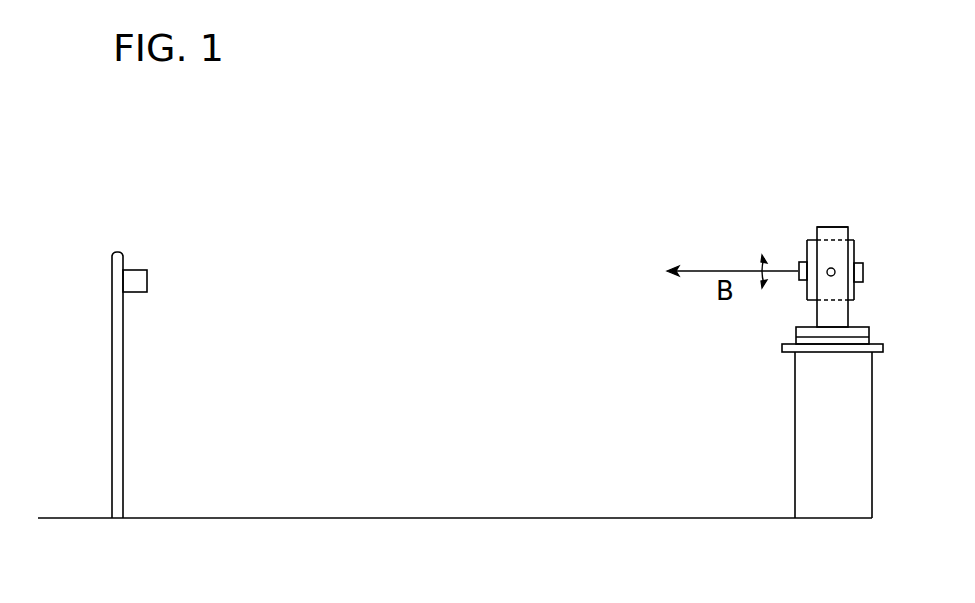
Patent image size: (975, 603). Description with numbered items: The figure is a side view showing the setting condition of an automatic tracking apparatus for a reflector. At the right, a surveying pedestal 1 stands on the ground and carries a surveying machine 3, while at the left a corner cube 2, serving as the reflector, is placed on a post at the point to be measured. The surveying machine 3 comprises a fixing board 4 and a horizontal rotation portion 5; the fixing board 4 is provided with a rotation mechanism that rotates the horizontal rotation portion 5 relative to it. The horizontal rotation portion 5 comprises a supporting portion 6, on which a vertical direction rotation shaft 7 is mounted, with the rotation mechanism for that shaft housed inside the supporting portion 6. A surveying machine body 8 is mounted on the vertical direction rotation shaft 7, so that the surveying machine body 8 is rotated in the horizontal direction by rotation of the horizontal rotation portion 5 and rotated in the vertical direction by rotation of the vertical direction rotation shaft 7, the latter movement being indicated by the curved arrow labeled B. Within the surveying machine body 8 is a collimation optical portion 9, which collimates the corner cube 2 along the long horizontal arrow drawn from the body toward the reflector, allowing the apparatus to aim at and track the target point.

The surveying pedestal 1 is at (797, 423).
The corner cube 2 is at (147, 280).
The surveying machine 3 is at (822, 223).
The fixing board 4 is at (784, 345).
The horizontal rotation portion 5 is at (796, 333).
The supporting portion 6 is at (840, 227).
The vertical direction rotation shaft 7 is at (835, 268).
The surveying machine body 8 is at (862, 288).
The collimation optical portion 9 is at (800, 280).